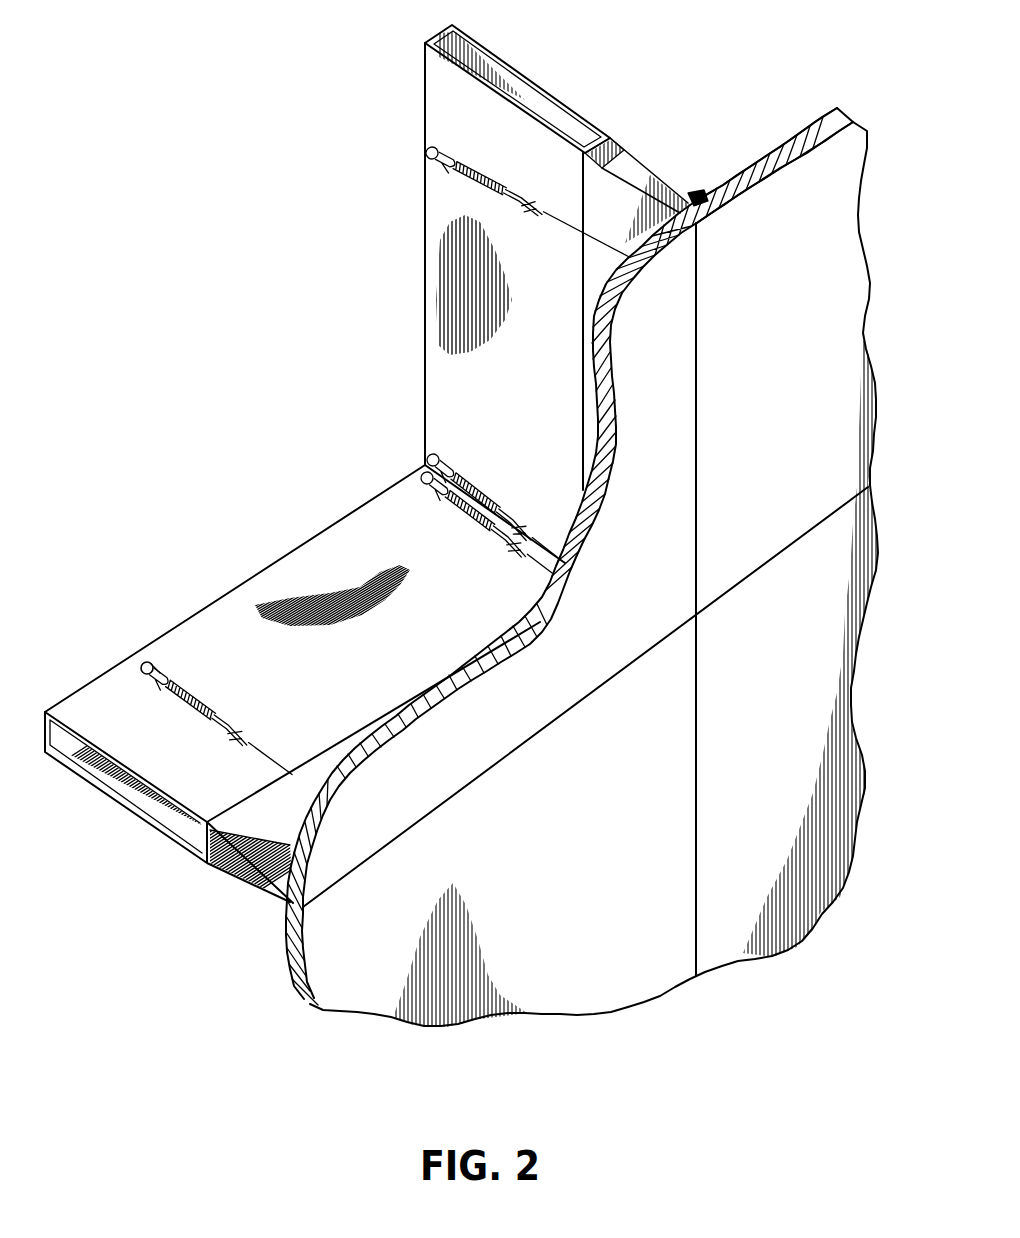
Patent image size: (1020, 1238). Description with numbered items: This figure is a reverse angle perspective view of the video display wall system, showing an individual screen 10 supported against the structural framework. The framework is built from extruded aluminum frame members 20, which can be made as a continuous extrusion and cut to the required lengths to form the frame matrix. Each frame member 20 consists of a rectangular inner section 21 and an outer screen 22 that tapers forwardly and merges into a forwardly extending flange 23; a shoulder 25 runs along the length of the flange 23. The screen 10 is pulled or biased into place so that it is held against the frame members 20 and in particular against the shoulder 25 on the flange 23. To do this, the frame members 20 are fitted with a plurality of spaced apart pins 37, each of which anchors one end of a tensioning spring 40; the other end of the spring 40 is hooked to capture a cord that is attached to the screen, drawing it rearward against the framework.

The screen 10 is at (790, 485).
The frame member 20 is at (457, 622).
The rectangular inner section 21 is at (510, 63).
The outer screen 22 is at (648, 173).
The forwardly extending flange 23 is at (700, 186).
The shoulder 25 is at (689, 190).
The pin 37 is at (147, 662).
The tensioning spring 40 is at (186, 690).